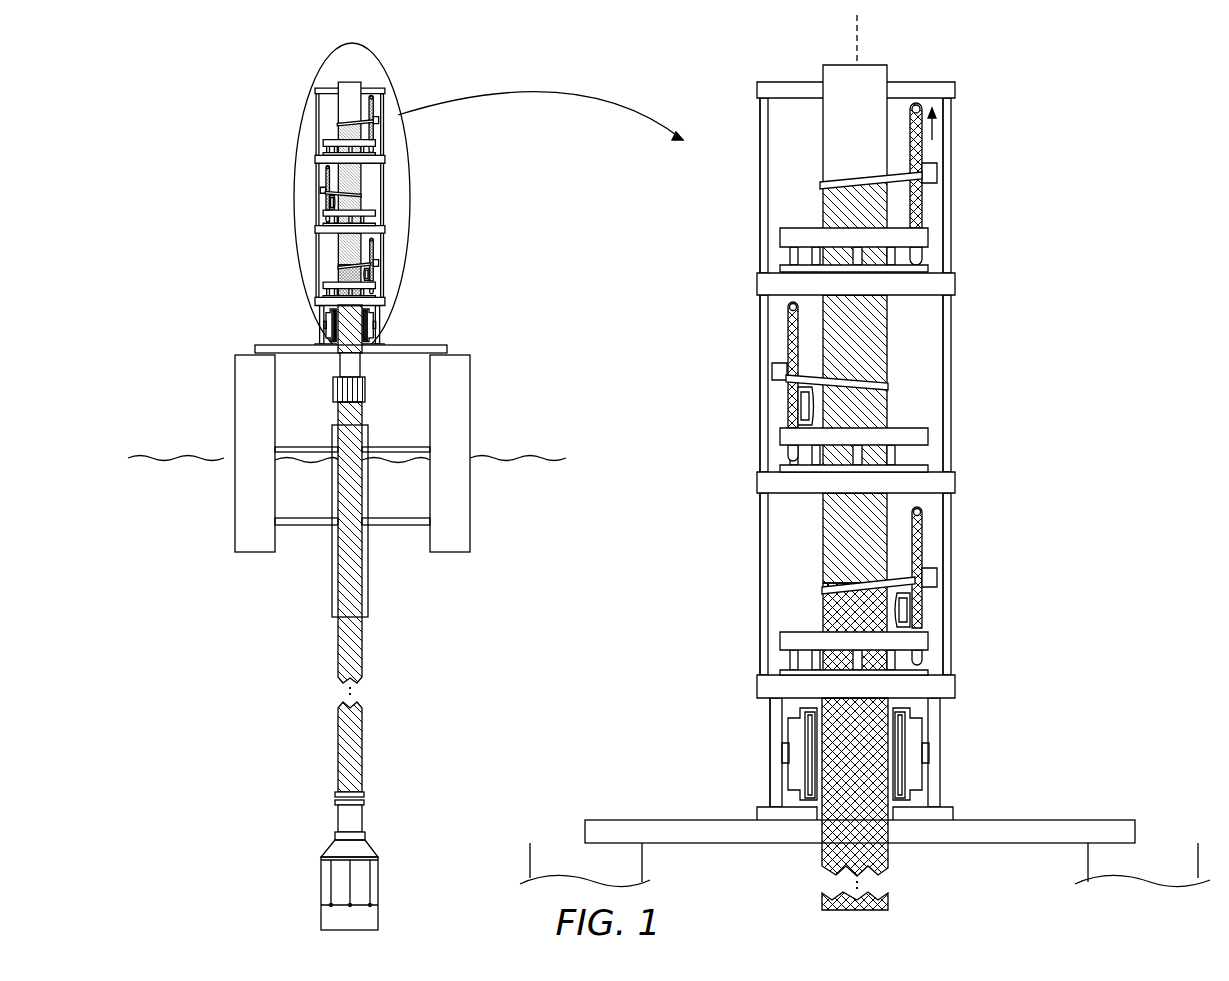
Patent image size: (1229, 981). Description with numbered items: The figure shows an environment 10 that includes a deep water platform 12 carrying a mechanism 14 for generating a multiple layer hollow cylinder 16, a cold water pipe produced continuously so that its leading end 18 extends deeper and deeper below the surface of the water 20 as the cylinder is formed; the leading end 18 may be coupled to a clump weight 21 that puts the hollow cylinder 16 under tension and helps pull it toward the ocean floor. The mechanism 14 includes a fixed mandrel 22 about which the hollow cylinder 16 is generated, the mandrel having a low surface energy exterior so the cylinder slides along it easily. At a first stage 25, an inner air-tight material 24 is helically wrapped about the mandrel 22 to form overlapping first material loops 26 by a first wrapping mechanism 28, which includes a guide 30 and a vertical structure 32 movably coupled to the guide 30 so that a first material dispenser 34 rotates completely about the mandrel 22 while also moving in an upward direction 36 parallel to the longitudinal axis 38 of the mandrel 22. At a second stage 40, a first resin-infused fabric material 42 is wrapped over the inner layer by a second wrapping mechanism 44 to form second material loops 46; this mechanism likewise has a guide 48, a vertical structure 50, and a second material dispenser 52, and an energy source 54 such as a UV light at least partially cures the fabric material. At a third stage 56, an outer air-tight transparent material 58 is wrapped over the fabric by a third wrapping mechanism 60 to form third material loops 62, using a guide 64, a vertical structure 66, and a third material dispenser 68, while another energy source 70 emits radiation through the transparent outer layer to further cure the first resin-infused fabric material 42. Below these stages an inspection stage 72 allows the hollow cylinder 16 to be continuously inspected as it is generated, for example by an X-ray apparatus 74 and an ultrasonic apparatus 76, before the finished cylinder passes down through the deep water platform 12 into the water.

The environment 10 is at (267, 58).
The deep water platform 12 is at (1135, 822).
The mechanism 14 is at (386, 72).
The multiple layer hollow cylinder 16 is at (363, 725).
The leading end 18 is at (378, 802).
The surface of the water 20 is at (183, 458).
The clump weight 21 is at (321, 870).
The mandrel 22 is at (843, 72).
The inner air-tight material 24 is at (832, 218).
The first stage 25 is at (808, 123).
The first material loops 26 is at (833, 177).
The first wrapping mechanism 28 is at (960, 95).
The guide 30 is at (793, 240).
The vertical structure 32 is at (925, 213).
The first material dispenser 34 is at (934, 175).
The upward direction 36 is at (934, 130).
The longitudinal axis 38 is at (858, 38).
The second stage 40 is at (913, 318).
The first resin-infused fabric material 42 is at (878, 400).
The second wrapping mechanism 44 is at (752, 297).
The second material loops 46 is at (872, 380).
The guide 48 is at (920, 433).
The vertical structure 50 is at (787, 315).
The second material dispenser 52 is at (780, 372).
The energy source 54 is at (793, 412).
The third stage 56 is at (808, 512).
The outer air-tight transparent material 58 is at (827, 617).
The third wrapping mechanism 60 is at (960, 500).
The third material loops 62 is at (843, 580).
The guide 64 is at (792, 642).
The vertical structure 66 is at (920, 520).
The third material dispenser 68 is at (932, 577).
The energy source 70 is at (918, 620).
The inspection stage 72 is at (760, 713).
The X-ray apparatus 74 is at (915, 733).
The ultrasonic apparatus 76 is at (797, 735).